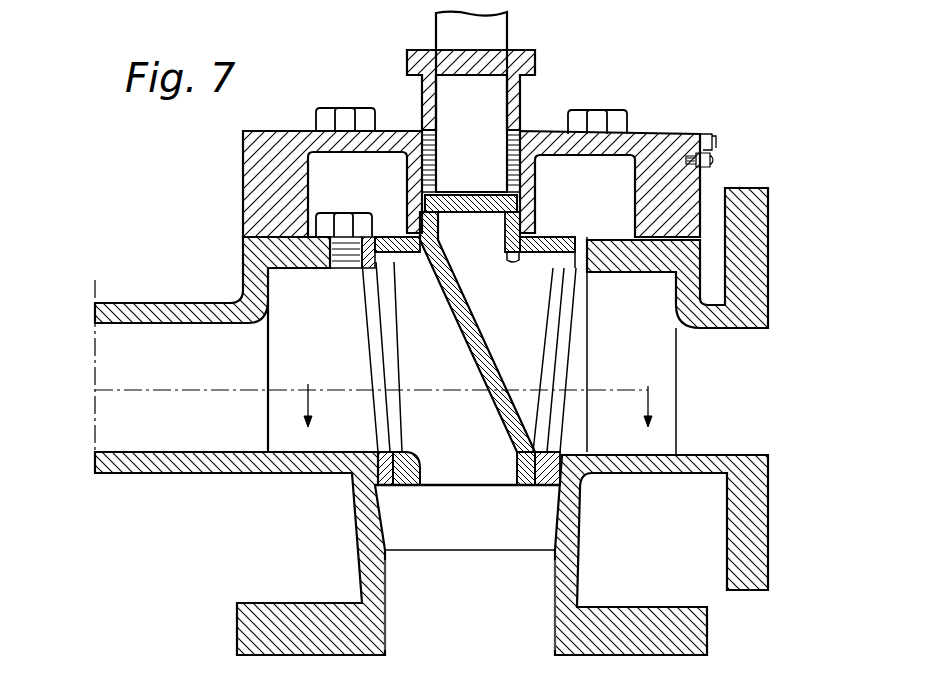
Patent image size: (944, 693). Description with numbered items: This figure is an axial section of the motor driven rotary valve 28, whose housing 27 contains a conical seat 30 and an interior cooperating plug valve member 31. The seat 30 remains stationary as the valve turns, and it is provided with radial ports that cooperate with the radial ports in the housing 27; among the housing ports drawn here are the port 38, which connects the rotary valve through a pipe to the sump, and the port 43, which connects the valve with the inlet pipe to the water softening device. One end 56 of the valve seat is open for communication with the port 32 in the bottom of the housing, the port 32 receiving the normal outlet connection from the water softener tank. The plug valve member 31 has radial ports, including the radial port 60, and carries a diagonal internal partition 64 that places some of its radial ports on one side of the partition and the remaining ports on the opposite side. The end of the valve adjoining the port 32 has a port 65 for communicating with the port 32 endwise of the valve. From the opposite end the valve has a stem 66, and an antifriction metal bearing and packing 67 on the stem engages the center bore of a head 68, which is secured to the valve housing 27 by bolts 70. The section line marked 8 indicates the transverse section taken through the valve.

The housing 27 is at (242, 266).
The motor driven rotary valve 28 is at (363, 511).
The port 32 is at (478, 612).
The head 68 is at (550, 133).
The bolts 70 is at (348, 112).
The radial port 60 is at (508, 33).
The stem 66 is at (481, 112).
The antifriction metal bearing and packing 67 is at (436, 150).
The diagonal internal partition 64 is at (484, 353).
The port 65 is at (455, 487).
The plug valve member 31 is at (518, 257).
The conical seat 30 is at (565, 336).
The end of the valve seat 56 is at (384, 488).
The port 38 is at (316, 373).
The port 43 is at (648, 382).
The section line 8- 8 is at (381, 404).